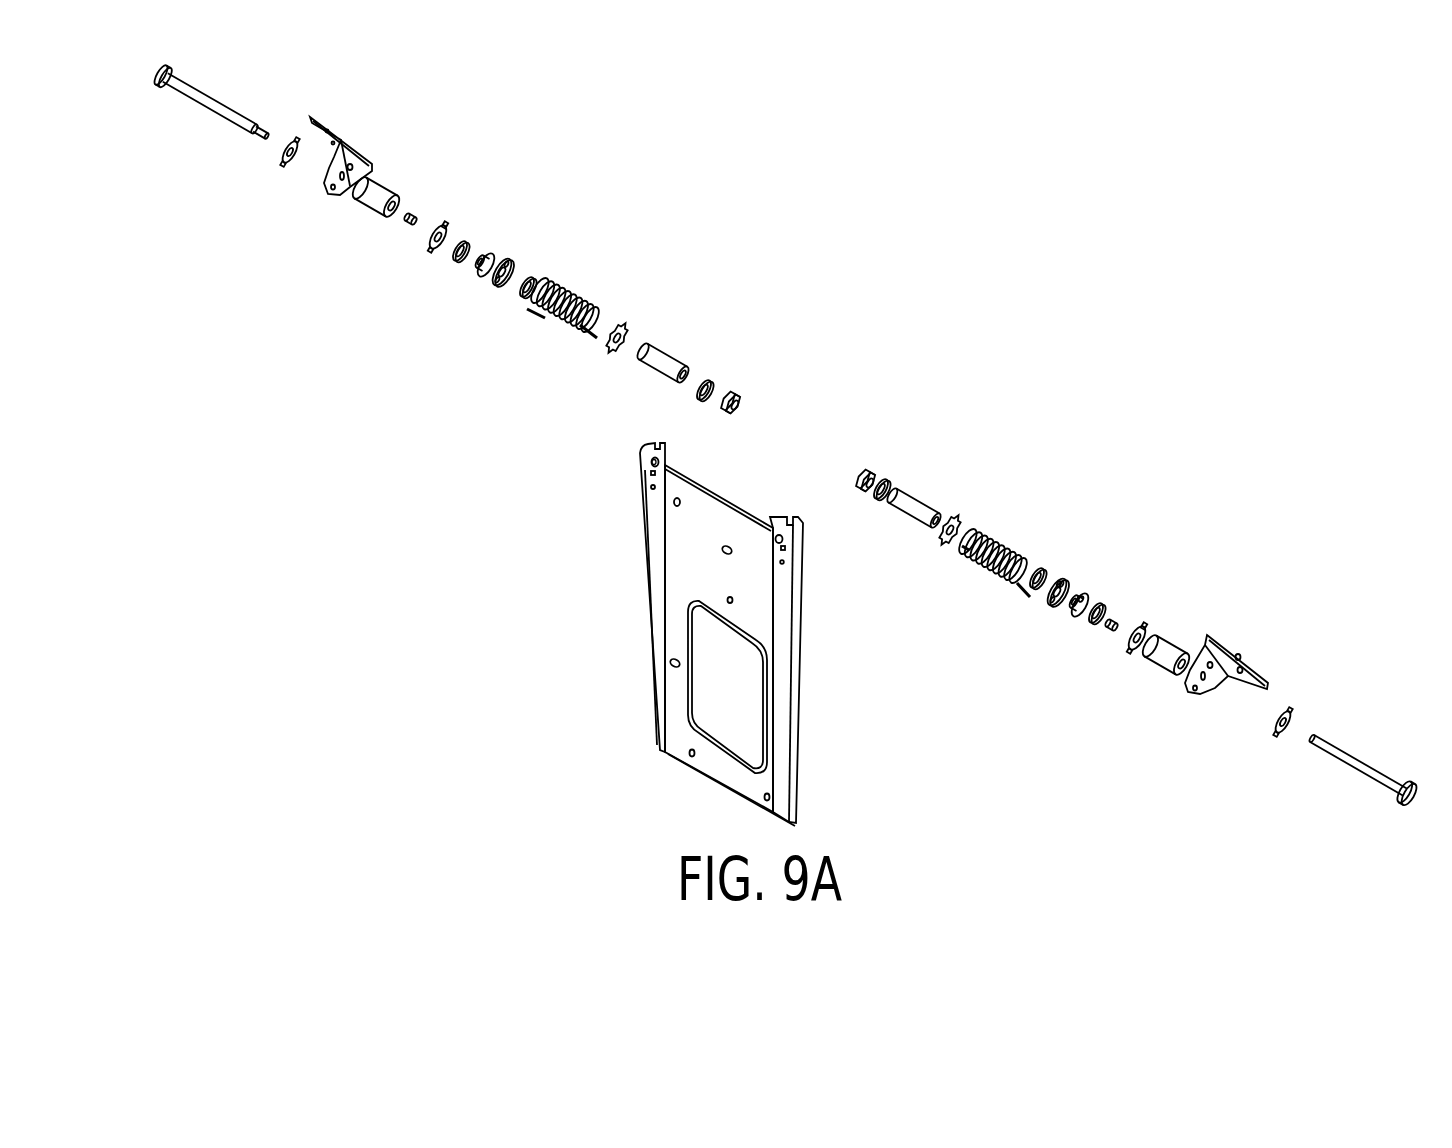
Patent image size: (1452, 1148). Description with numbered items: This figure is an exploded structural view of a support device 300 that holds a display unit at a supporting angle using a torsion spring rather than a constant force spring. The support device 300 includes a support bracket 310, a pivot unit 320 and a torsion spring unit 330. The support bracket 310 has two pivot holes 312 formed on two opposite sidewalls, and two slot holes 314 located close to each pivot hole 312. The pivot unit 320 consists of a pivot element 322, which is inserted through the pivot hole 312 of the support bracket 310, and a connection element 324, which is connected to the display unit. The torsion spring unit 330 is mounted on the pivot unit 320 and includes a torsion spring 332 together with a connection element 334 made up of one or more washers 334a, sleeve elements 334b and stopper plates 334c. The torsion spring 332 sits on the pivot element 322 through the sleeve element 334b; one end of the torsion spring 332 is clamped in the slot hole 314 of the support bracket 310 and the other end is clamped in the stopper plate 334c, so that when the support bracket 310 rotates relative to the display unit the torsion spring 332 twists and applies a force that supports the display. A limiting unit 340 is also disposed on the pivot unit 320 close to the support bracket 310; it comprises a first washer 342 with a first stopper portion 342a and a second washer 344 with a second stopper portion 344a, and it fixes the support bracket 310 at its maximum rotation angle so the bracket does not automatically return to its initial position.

The support device 300 is at (1205, 326).
The support bracket 310 is at (672, 723).
The pivot hole 312 is at (650, 462).
The slot hole 314 is at (650, 488).
The pivot unit 320 is at (1383, 625).
The pivot element 322 is at (1345, 753).
The connection element 324 is at (1235, 643).
The torsion spring unit 330 is at (908, 702).
The torsion spring 332 is at (1005, 582).
The connection element 334 is at (893, 645).
The washer 334a is at (868, 492).
The sleeve element 334b is at (910, 508).
The stopper plate 334c is at (945, 538).
The limiting unit 340 is at (1038, 708).
The first washer 342 is at (1050, 607).
The first stopper portion 342a is at (1060, 578).
The second washer 344 is at (1073, 613).
The second stopper portion 344a is at (1090, 597).